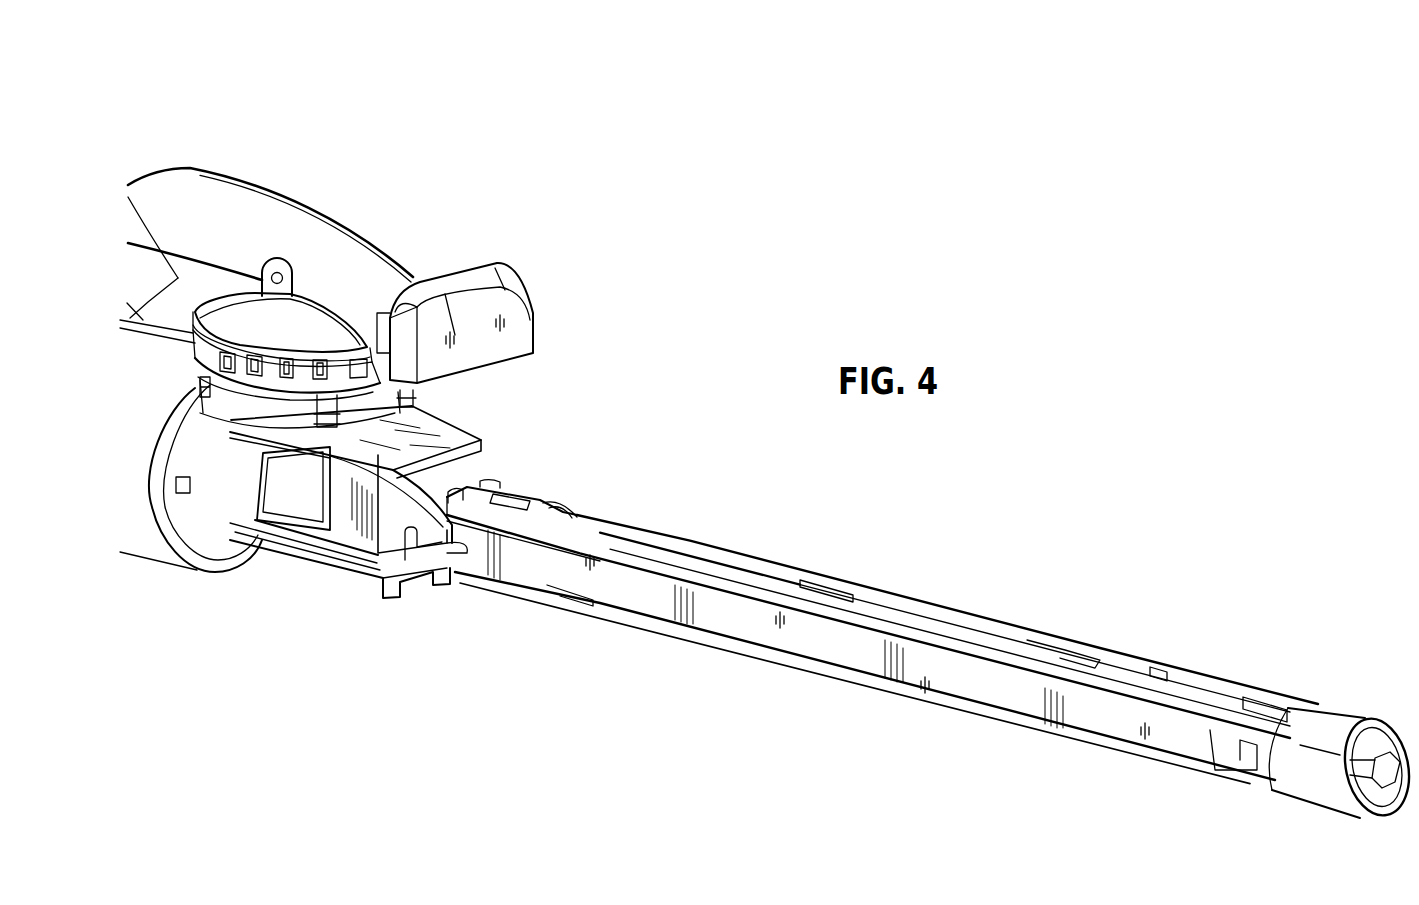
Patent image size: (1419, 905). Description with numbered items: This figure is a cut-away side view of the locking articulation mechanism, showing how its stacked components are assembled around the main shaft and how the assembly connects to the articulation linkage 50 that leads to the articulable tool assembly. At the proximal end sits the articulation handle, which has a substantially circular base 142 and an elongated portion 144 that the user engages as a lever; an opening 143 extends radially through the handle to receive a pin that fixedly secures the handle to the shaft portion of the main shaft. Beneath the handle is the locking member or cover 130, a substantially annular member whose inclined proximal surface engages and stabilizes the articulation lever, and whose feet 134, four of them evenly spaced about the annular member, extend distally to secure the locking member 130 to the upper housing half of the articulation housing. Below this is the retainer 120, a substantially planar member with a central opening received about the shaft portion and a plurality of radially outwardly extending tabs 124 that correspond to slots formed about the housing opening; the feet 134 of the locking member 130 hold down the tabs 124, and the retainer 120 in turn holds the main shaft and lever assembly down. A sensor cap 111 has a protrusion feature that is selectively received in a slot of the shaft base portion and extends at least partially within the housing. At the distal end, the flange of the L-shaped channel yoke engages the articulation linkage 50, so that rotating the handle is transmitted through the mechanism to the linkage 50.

The articulation linkage 50 is at (822, 636).
The sensor cap 111 is at (277, 547).
The retainer 120 is at (288, 413).
The tabs 124 is at (440, 414).
The locking member or cover 130 is at (210, 350).
The feet 134 is at (198, 380).
The substantially circular base 142 is at (211, 300).
The opening 143 is at (289, 265).
The elongated portion 144 is at (248, 200).